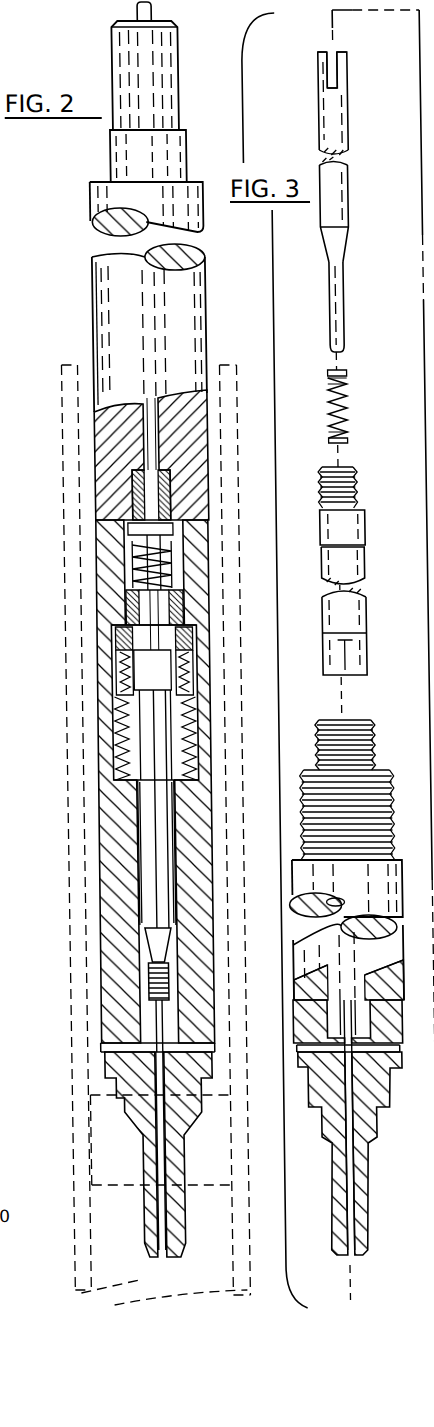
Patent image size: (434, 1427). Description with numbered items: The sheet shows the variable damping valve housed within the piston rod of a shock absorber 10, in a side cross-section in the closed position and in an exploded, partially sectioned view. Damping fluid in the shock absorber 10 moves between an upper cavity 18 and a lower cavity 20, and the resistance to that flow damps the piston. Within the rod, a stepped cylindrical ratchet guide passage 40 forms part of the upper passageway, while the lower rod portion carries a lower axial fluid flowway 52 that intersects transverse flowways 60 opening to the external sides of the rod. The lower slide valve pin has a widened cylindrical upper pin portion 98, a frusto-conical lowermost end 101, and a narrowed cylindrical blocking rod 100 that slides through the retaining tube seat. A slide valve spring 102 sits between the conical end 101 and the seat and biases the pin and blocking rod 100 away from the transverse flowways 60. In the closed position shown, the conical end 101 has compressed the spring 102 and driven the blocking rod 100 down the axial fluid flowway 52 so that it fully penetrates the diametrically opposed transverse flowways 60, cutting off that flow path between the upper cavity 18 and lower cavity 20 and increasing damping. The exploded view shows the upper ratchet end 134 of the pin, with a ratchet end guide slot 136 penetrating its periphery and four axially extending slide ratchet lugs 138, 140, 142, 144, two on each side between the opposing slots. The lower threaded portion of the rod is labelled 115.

In FIG. 2, the shock absorber 10 is at (201, 353).
In FIG. 2, the upper cavity 18 is at (206, 412).
In FIG. 2, the lower cavity 20 is at (54, 1265).
In FIG. 2, the stepped cylindrical ratchet guide passage 40 is at (90, 556).
In FIG. 2, the lower axial fluid flowway 52 is at (140, 1150).
In FIG. 2, the transverse flowways 60 is at (89, 1050).
In FIG. 3, the upper pin portion 98 is at (336, 213).
In FIG. 2, the blocking rod 100 is at (145, 1038).
In FIG. 3, the blocking rod 100 is at (342, 338).
In FIG. 2, the frusto-conical lowermost end 101 is at (134, 946).
In FIG. 2, the slide valve spring 102 is at (86, 907).
In FIG. 2, the threaded body portion 115 is at (186, 1106).
In FIG. 3, the upper ratchet end 134 is at (318, 54).
In FIG. 3, the ratchet end guide slot 136 is at (326, 94).
In FIG. 3, the slide ratchet lug 138 is at (320, 57).
In FIG. 3, the slide ratchet lug 140 is at (324, 70).
In FIG. 3, the slide ratchet lug 142 is at (337, 58).
In FIG. 3, the slide ratchet lug 144 is at (343, 58).